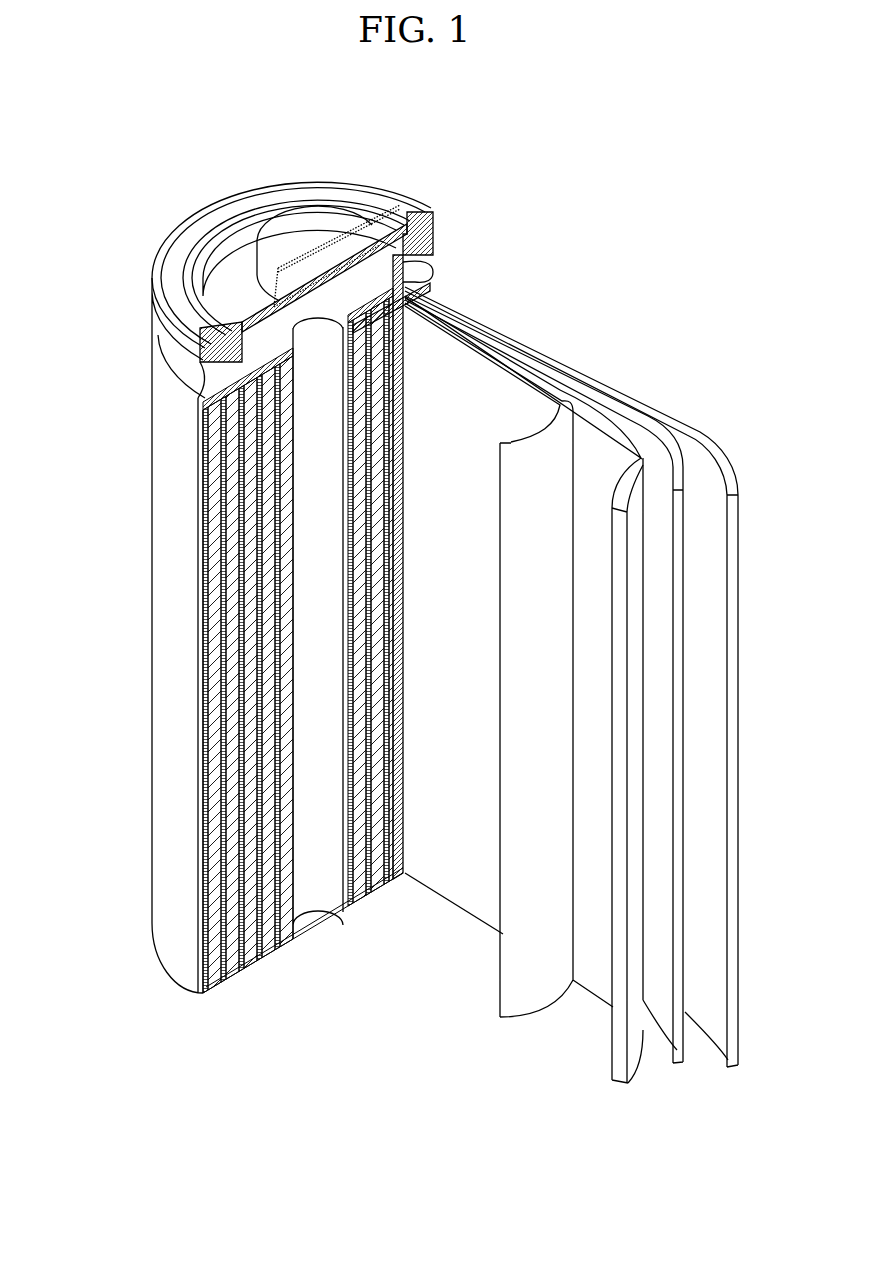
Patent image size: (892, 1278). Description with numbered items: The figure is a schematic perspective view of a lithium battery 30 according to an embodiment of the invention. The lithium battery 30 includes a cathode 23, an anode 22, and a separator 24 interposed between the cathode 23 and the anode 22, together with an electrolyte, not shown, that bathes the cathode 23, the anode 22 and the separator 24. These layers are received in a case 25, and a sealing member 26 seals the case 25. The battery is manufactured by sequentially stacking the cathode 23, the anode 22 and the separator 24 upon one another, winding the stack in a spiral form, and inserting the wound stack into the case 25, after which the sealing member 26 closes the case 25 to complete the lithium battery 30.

The lithium battery 30 is at (381, 117).
The sealing member 26 is at (287, 233).
The case 25 is at (160, 637).
The separator 24 is at (538, 447).
The cathode 23 is at (631, 453).
The anode 22 is at (712, 455).